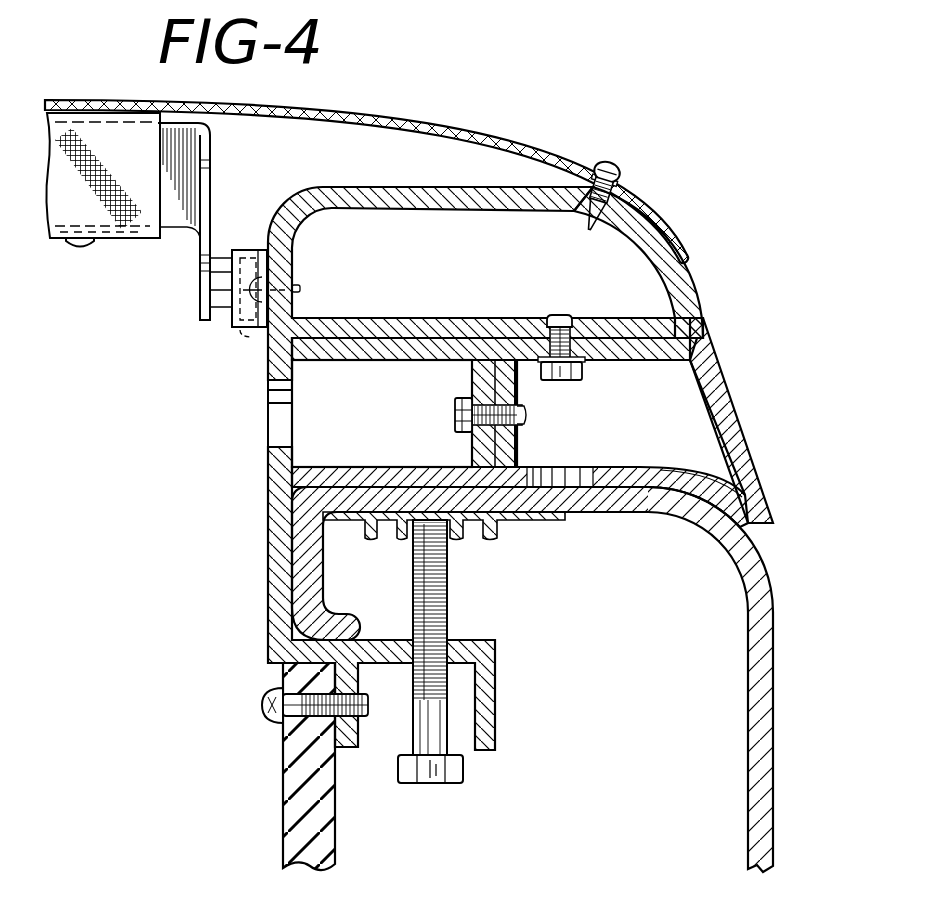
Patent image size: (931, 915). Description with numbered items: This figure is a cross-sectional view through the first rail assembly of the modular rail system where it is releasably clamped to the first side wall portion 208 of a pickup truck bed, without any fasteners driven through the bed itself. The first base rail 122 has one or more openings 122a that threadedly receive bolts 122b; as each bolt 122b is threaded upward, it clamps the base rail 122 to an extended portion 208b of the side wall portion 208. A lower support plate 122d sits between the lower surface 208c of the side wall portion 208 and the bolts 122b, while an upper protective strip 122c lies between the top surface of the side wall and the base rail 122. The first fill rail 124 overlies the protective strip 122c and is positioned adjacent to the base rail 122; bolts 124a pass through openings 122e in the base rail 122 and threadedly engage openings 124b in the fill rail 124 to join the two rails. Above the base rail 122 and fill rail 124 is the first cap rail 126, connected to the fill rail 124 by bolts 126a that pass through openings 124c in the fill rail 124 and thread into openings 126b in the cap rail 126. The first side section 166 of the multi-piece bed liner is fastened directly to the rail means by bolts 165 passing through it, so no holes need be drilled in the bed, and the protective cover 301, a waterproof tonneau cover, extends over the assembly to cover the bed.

The protective cover 301 is at (515, 143).
The first fill rail 124 is at (728, 405).
The bolts 124a is at (455, 410).
The openings 124b is at (523, 415).
The openings 124c is at (556, 318).
The first cap rail 126 is at (688, 280).
The bolts 126a is at (570, 378).
The openings 126b is at (565, 318).
The first base rail 122 is at (277, 537).
The openings 122a is at (440, 648).
The bolts 122b is at (437, 783).
The upper protective strip 122c is at (688, 493).
The lower support plate 122d is at (500, 525).
The openings 122e is at (453, 420).
The first side wall portion 208 is at (770, 695).
The extended portion 208b is at (610, 512).
The lower surface 208c is at (636, 513).
The bolts 165 is at (268, 700).
The first side section 166 is at (330, 828).